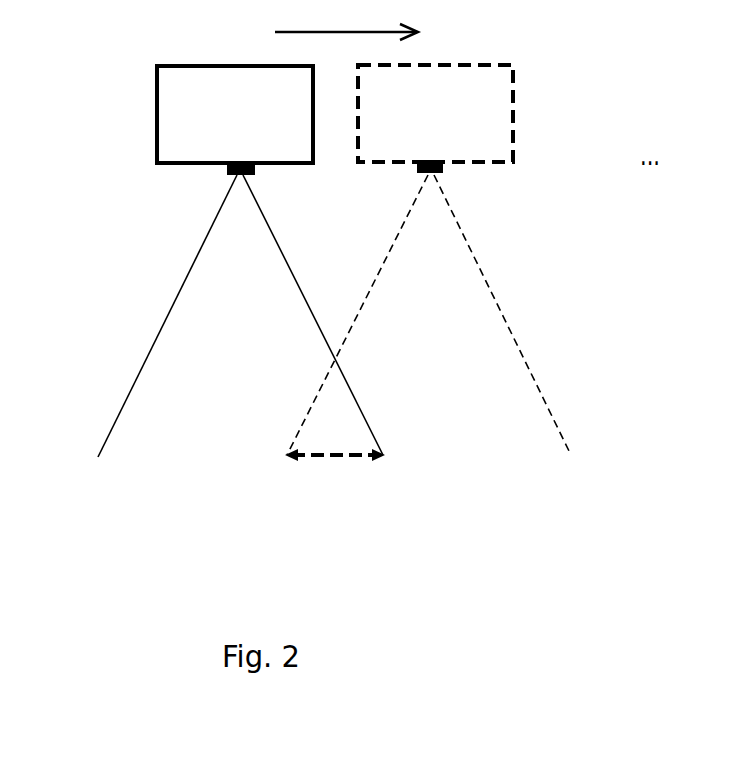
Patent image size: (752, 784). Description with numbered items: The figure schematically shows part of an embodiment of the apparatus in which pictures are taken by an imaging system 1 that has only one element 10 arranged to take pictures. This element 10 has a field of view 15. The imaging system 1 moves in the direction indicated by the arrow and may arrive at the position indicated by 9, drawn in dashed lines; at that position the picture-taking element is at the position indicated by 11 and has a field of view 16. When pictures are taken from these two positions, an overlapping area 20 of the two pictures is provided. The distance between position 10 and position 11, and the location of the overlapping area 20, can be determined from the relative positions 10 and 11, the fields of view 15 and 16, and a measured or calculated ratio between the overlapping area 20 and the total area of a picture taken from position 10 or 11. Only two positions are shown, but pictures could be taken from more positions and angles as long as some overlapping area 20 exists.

The imaging system 1 is at (235, 114).
The position of the imaging system 9 is at (435, 113).
The element arranged to take pictures 10 is at (237, 176).
The position of the element for taking pictures 11 is at (433, 175).
The field of view 15 is at (157, 343).
The field of view 16 is at (535, 387).
The overlapping area 20 is at (342, 453).